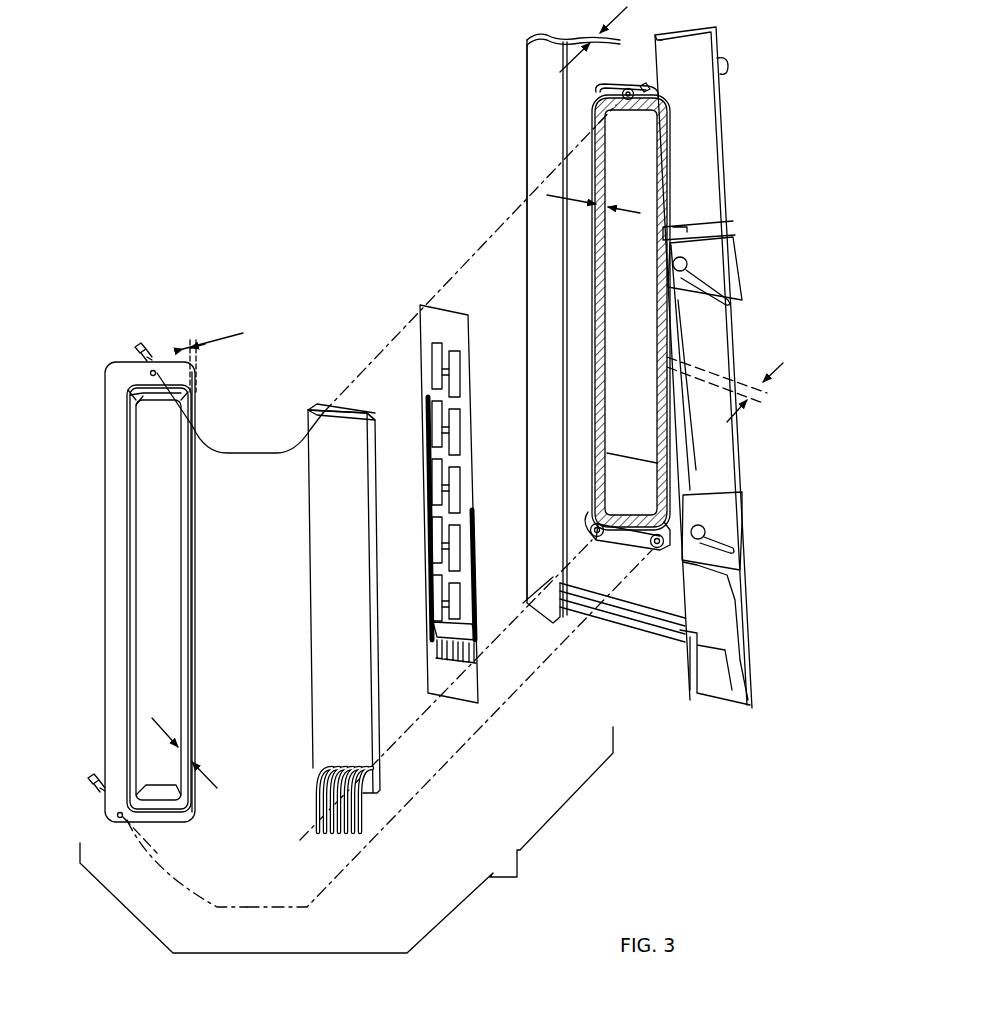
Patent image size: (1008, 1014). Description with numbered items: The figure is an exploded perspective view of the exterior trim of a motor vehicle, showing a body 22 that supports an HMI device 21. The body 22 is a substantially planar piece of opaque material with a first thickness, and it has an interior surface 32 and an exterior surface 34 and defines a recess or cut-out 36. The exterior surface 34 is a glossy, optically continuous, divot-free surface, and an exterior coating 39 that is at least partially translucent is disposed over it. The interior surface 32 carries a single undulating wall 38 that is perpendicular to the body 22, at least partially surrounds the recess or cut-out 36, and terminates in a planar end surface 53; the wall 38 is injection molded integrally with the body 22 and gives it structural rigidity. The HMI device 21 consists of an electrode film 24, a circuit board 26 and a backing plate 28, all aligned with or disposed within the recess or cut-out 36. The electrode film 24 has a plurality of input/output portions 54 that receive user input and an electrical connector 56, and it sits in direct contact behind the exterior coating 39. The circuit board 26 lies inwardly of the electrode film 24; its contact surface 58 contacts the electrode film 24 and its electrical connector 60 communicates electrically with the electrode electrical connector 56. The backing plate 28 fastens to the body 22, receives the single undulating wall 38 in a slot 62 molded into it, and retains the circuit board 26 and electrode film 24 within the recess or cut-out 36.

The HMI device 21 is at (366, 529).
The body 22 is at (528, 186).
The electrode film 24 is at (428, 532).
The circuit board 26 is at (320, 647).
The backing plate 28 is at (112, 503).
The interior surface 32 is at (580, 90).
The exterior surface 34 is at (720, 68).
The recess or cut-out 36 is at (622, 256).
The single undulating wall 38 is at (693, 231).
The exterior coating 39 is at (720, 112).
The end surface 53 is at (605, 372).
The input/output portions 54 is at (443, 378).
The electrical connector 56 is at (440, 648).
The contact surface 58 is at (315, 405).
The electrical connector 60 is at (318, 808).
The slot 62 is at (195, 487).